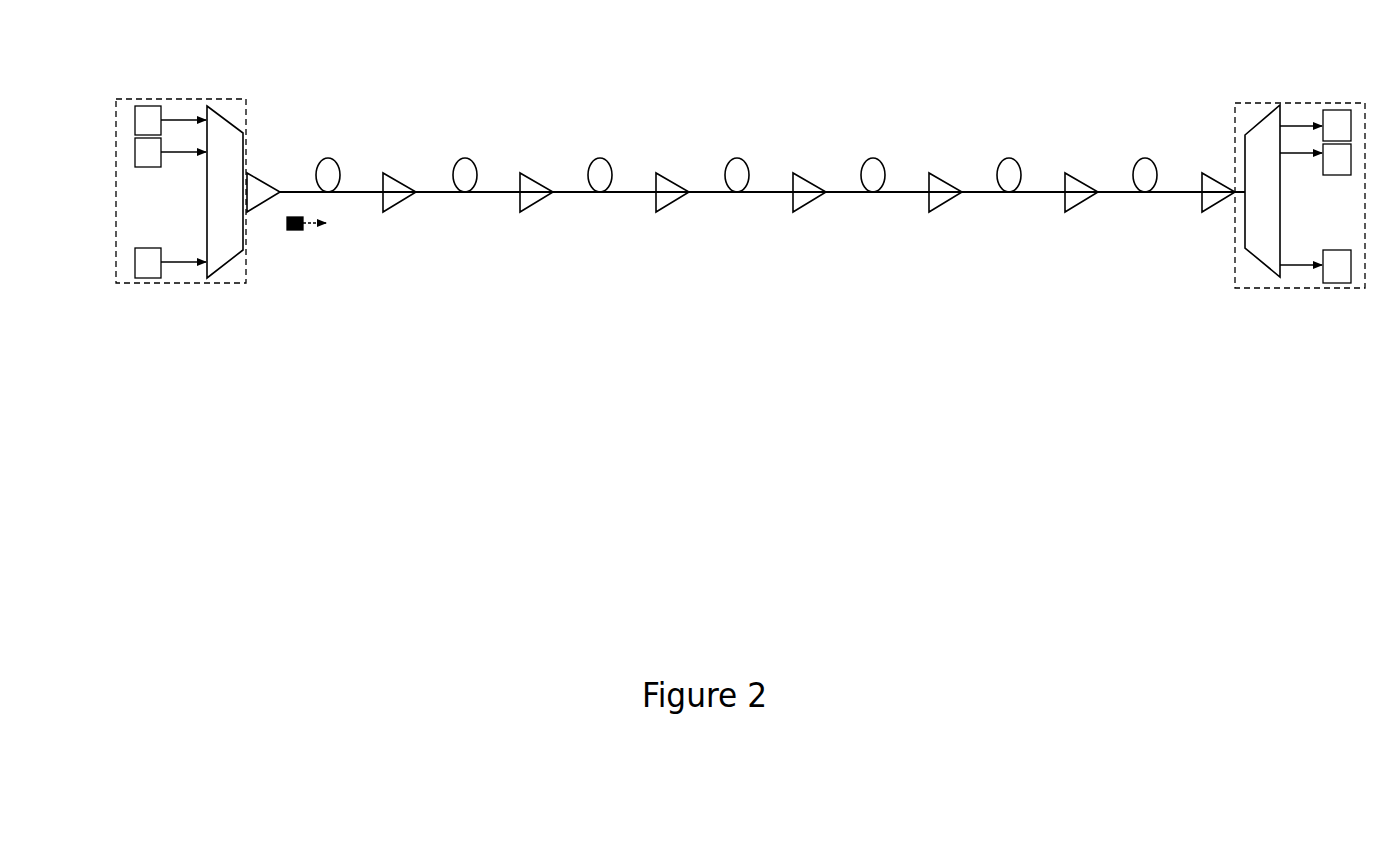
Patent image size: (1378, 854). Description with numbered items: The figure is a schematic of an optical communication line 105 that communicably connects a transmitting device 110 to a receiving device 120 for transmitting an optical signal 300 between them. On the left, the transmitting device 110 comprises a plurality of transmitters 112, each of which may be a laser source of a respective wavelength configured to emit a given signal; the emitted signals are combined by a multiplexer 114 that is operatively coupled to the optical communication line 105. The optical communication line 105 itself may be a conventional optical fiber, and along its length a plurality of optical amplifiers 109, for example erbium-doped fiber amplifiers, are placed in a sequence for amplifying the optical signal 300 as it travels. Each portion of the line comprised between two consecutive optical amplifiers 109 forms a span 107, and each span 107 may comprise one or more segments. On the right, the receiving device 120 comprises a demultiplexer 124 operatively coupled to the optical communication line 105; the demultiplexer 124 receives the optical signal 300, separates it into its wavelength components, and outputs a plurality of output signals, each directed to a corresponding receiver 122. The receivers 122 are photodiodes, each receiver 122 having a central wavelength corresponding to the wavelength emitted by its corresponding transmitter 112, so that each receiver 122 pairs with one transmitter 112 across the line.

The optical communication line 105 is at (352, 146).
The span 107 is at (503, 192).
The optical amplifier 109 is at (527, 203).
The transmitting device 110 is at (222, 285).
The transmitter 112 is at (148, 105).
The multiplexer 114 is at (222, 120).
The receiving device 120 is at (1250, 292).
The receiver 122 is at (1340, 112).
The demultiplexer 124 is at (1260, 130).
The optical signal 300 is at (300, 232).